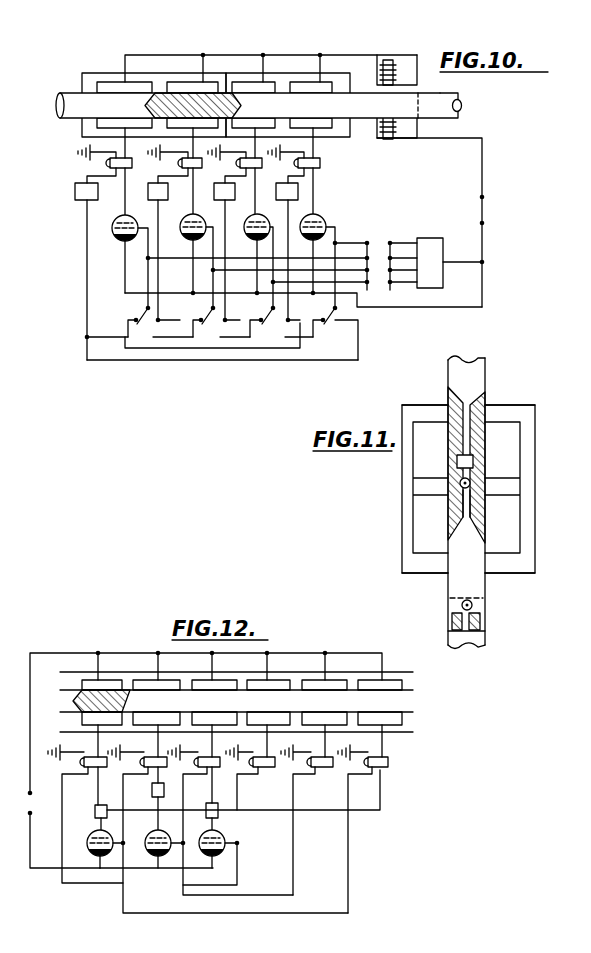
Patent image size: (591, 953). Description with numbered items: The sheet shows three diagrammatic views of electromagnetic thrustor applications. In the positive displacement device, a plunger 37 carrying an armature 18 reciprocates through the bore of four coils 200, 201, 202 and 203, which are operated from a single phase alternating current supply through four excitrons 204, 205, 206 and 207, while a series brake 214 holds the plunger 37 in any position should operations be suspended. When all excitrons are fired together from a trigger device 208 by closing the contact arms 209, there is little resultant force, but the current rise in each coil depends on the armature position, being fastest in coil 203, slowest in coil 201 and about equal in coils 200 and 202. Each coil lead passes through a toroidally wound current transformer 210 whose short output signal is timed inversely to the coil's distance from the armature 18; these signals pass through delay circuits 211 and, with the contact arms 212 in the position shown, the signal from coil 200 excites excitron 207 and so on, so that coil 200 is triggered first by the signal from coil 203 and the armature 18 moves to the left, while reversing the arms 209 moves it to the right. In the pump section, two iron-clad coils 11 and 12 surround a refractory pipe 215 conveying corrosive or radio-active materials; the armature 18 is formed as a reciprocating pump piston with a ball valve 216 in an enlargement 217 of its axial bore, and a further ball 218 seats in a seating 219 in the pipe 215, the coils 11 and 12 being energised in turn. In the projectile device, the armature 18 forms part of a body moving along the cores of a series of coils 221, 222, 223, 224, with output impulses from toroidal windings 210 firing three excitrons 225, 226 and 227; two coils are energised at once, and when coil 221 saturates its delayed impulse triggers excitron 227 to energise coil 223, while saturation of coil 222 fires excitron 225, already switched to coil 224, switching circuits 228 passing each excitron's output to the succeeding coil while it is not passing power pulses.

In FIG. 10, the armature 18 is at (208, 100).
In FIG. 11, the armature 18 is at (483, 400).
In FIG. 12, the armature 18 is at (106, 692).
In FIG. 10, the plunger 37 is at (462, 110).
In FIG. 10, the coil 200 is at (108, 82).
In FIG. 10, the coil 201 is at (173, 80).
In FIG. 10, the coil 202 is at (252, 82).
In FIG. 10, the coil 203 is at (308, 82).
In FIG. 10, the series brake 214 is at (377, 70).
In FIG. 10, the toroidally wound current transformer 210 is at (190, 158).
In FIG. 12, the toroidally wound current transformer 210 is at (146, 760).
In FIG. 10, the delay circuit 211 is at (148, 191).
In FIG. 10, the excitron 204 is at (113, 230).
In FIG. 10, the excitron 205 is at (180, 222).
In FIG. 10, the excitron 206 is at (268, 221).
In FIG. 10, the excitron 207 is at (330, 221).
In FIG. 10, the trigger device 208 is at (445, 231).
In FIG. 10, the contact arm 209 is at (381, 242).
In FIG. 10, the contact arm 212 is at (205, 322).
In FIG. 11, the refractory pipe 215 is at (447, 370).
In FIG. 11, the iron-clad coil 12 is at (420, 460).
In FIG. 11, the iron-clad coil 11 is at (420, 523).
In FIG. 11, the enlargement 217 is at (457, 478).
In FIG. 11, the ball valve 216 is at (453, 503).
In FIG. 11, the ball 218 is at (462, 605).
In FIG. 11, the seating 219 is at (476, 618).
In FIG. 12, the coil 221 is at (90, 680).
In FIG. 12, the coil 222 is at (135, 680).
In FIG. 12, the coil 223 is at (237, 680).
In FIG. 12, the coil 224 is at (282, 682).
In FIG. 12, the excitron 225 is at (92, 852).
In FIG. 12, the excitron 226 is at (155, 857).
In FIG. 12, the excitron 227 is at (226, 850).
In FIG. 12, the switching circuit 228 is at (152, 790).